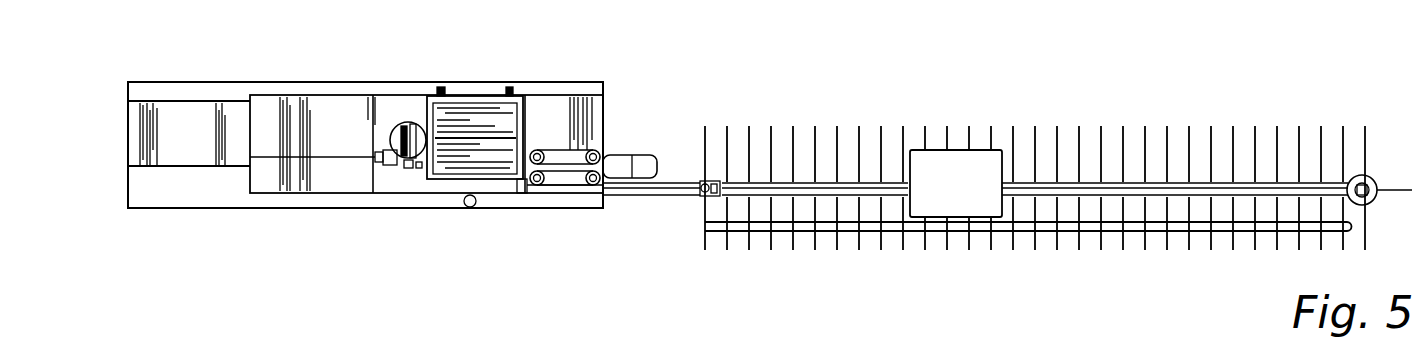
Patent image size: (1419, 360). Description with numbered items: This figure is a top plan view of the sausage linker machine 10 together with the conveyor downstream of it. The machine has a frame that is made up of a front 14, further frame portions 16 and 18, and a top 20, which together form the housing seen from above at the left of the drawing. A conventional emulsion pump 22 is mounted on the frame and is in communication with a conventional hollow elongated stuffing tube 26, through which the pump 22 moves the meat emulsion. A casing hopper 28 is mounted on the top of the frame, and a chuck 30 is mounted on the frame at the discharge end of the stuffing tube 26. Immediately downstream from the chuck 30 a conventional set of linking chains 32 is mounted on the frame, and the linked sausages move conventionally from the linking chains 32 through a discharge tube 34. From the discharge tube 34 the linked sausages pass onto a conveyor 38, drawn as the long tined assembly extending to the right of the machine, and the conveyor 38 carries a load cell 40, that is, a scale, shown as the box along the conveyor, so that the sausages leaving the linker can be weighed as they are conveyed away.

The sausage linker machine 10 is at (388, 63).
The front 14 is at (273, 158).
The frame portion 16 is at (175, 88).
The frame portion 18 is at (562, 175).
The top 20 is at (128, 94).
The emulsion pump 22 is at (400, 123).
The stuffing tube 26 is at (308, 207).
The casing hopper 28 is at (483, 96).
The chuck 30 is at (525, 150).
The linking chains 32 is at (580, 160).
The discharge tube 34 is at (620, 167).
The conveyor 38 is at (761, 182).
The load cell 40 is at (985, 150).